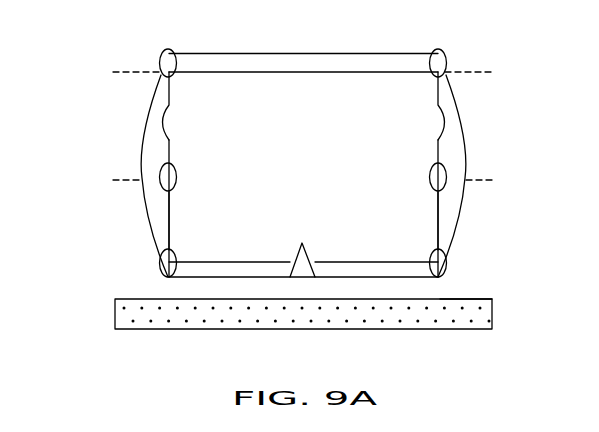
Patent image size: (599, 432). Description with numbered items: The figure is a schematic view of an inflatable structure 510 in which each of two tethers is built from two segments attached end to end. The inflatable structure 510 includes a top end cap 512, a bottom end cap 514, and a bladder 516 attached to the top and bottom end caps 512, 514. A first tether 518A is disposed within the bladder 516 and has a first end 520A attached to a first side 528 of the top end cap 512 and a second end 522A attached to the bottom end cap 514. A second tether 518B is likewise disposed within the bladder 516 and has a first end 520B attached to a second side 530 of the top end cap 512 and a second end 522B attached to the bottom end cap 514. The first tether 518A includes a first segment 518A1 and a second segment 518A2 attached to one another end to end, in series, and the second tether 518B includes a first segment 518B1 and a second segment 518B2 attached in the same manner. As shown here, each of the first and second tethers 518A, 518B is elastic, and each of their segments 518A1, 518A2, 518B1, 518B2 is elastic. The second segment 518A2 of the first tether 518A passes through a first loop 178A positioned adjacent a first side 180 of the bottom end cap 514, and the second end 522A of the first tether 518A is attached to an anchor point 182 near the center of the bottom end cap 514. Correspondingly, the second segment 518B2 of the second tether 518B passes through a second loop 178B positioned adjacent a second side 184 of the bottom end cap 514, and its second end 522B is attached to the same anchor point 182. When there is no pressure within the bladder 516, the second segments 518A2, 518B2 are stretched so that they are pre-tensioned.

The inflatable structure 510 is at (113, 343).
The top end cap 512 is at (265, 65).
The bottom end cap 514 is at (215, 288).
The bladder 516 is at (140, 201).
The first tether 518A is at (167, 145).
The second tether 518B is at (440, 152).
The first segment of the first tether 518A1 is at (165, 101).
The second segment of the first tether 518A2 is at (167, 213).
The first segment of the second tether 518B1 is at (445, 100).
The second segment of the second tether 518B2 is at (440, 227).
The first end of the first tether 520A is at (168, 88).
The first end of the second tether 520B is at (440, 87).
The second end of the first tether 522A is at (258, 262).
The second end of the second tether 522B is at (362, 262).
The first side of the top end cap 528 is at (178, 63).
The second side of the top end cap 530 is at (428, 60).
The first loop 178A is at (163, 262).
The second loop 178B is at (445, 262).
The first side of the bottom end cap 180 is at (170, 288).
The anchor point 182 is at (302, 268).
The second side of the bottom end cap 184 is at (438, 277).